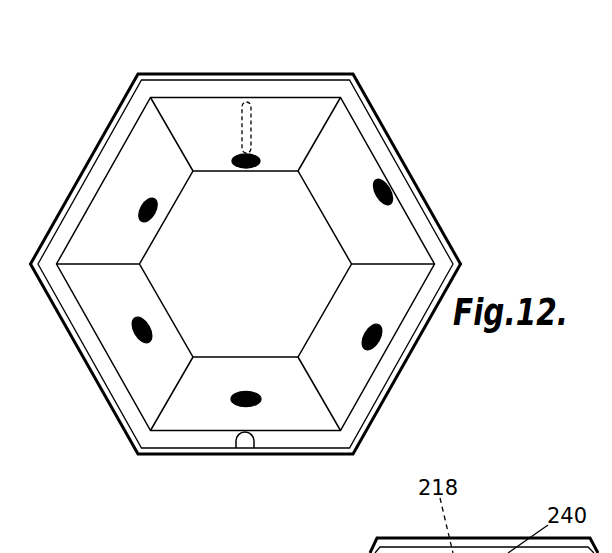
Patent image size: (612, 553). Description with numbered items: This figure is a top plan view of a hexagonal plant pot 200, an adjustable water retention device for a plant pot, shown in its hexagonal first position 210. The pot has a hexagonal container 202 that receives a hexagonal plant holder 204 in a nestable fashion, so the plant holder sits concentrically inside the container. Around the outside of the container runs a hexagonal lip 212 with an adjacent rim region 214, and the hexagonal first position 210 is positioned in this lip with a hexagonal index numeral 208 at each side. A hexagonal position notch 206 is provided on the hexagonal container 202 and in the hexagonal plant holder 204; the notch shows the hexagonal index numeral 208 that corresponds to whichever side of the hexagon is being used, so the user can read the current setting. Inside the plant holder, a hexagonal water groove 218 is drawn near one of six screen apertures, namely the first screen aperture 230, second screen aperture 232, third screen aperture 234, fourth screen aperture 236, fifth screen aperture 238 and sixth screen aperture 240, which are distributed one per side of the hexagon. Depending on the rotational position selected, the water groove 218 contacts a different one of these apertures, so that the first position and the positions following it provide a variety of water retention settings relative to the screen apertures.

The hexagonal plant pot 200 is at (108, 105).
The hexagonal container 202 is at (68, 197).
The hexagonal plant holder 204 is at (165, 180).
The hexagonal position notch 206 is at (257, 437).
The hexagonal index numeral 208 is at (240, 452).
The hexagonal first position 210 is at (219, 483).
The hexagonal lip 212 is at (390, 146).
The rim flange 214 is at (410, 198).
The hexagonal water groove 218 is at (237, 150).
The first screen aperture 230 is at (262, 165).
The second screen aperture 232 is at (139, 213).
The third screen aperture 234 is at (133, 317).
The fourth screen aperture 236 is at (246, 388).
The fifth screen aperture 238 is at (363, 339).
The sixth screen aperture 240 is at (373, 188).